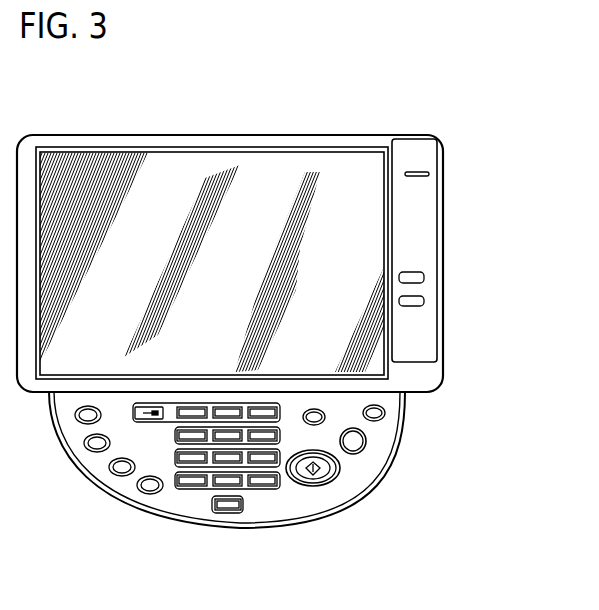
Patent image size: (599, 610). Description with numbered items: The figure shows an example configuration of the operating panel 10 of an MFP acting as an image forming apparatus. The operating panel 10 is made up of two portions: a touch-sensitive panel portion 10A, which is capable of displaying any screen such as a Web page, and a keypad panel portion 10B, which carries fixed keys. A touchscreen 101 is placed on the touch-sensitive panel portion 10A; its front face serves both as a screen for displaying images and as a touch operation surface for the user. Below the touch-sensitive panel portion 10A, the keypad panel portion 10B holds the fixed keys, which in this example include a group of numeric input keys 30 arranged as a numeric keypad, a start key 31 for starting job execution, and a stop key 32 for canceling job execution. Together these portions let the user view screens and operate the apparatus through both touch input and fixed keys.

The operating panel 10 is at (533, 457).
The touch-sensitive panel portion 10A is at (436, 207).
The keypad panel portion 10B is at (288, 495).
The touchscreen 101 is at (259, 172).
The numeric input keys 30 is at (285, 502).
The start key 31 is at (332, 482).
The stop key 32 is at (358, 452).